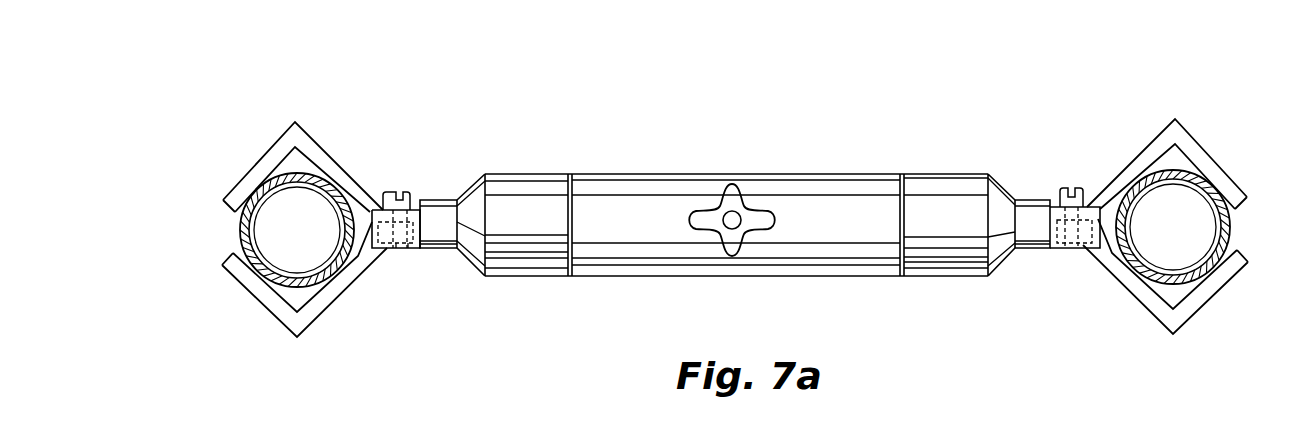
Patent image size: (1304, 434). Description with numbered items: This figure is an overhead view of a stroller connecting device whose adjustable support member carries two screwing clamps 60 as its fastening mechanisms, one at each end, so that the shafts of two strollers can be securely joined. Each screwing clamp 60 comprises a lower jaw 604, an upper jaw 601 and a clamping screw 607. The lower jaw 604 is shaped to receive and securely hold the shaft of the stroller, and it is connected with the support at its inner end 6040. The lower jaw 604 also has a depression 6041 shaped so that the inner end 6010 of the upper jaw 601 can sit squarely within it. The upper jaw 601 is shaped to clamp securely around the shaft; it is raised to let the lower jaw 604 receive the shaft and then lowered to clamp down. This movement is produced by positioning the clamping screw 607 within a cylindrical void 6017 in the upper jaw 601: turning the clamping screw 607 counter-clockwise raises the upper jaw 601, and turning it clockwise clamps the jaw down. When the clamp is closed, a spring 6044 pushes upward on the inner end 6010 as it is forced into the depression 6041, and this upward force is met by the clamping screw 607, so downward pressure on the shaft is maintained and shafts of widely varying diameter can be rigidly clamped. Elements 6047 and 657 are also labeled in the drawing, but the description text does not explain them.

The screwing clamp 60 is at (420, 120).
The upper jaw 601 is at (247, 176).
The lower jaw 604 is at (278, 318).
The clamping screw 607 is at (388, 192).
The inner end of the upper jaw 6010 is at (421, 200).
The cylindrical void 6017 is at (408, 252).
The inner end of the lower jaw 6040 is at (476, 178).
The depression 6041 is at (427, 219).
The spring 6044 is at (386, 252).
The threaded hole 6047 is at (396, 250).
The locking knob 657 is at (744, 212).